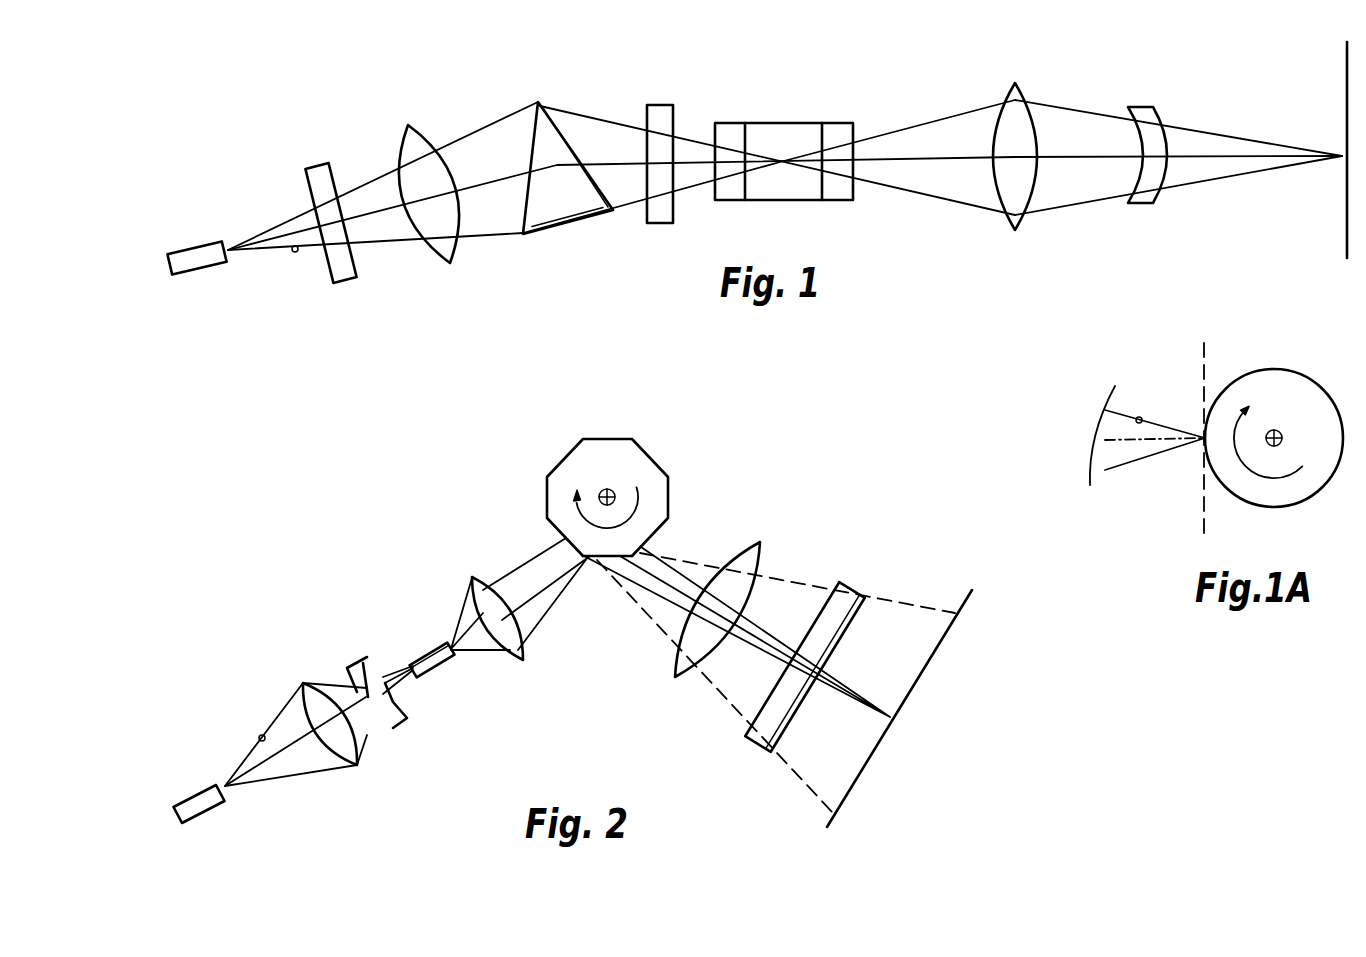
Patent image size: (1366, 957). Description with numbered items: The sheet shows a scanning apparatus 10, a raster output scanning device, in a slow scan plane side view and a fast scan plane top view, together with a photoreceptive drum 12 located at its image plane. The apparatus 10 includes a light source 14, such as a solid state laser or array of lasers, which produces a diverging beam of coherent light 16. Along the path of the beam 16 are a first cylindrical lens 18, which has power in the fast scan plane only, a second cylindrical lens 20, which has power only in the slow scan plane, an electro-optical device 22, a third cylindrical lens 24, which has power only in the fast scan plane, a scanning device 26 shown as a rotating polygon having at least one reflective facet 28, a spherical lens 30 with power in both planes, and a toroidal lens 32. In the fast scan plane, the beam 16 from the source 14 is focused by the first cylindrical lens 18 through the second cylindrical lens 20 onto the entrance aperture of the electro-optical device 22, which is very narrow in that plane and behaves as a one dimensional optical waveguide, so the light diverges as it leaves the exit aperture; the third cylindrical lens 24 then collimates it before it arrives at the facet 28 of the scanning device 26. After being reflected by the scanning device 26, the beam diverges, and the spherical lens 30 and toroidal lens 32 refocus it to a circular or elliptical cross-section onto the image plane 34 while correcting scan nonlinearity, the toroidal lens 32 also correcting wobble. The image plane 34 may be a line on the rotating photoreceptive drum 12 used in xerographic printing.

In FIG. 1, the scanning apparatus 10 is at (1098, 54).
In FIG. 2, the scanning apparatus 10 is at (362, 526).
In FIG. 1A, the photoreceptive drum 12 is at (1268, 370).
In FIG. 1, the light source 14 is at (197, 252).
In FIG. 2, the light source 14 is at (201, 799).
In FIG. 1, the beam of coherent light 16 is at (293, 253).
In FIG. 1A, the beam of coherent light 16 is at (1139, 417).
In FIG. 2, the beam of coherent light 16 is at (262, 736).
In FIG. 1, the first cylindrical lens 18 is at (320, 168).
In FIG. 2, the first cylindrical lens 18 is at (303, 682).
In FIG. 1, the second cylindrical lens 20 is at (409, 124).
In FIG. 2, the second cylindrical lens 20 is at (358, 657).
In FIG. 1, the electro-optical device 22 is at (540, 106).
In FIG. 2, the electro-optical device 22 is at (430, 650).
In FIG. 1, the third cylindrical lens 24 is at (663, 118).
In FIG. 2, the third cylindrical lens 24 is at (471, 577).
In FIG. 1, the scanning device 26 is at (740, 112).
In FIG. 2, the scanning device 26 is at (637, 465).
In FIG. 1, the reflective facet 28 is at (800, 137).
In FIG. 2, the reflective facet 28 is at (655, 561).
In FIG. 1, the spherical lens 30 is at (1014, 233).
In FIG. 2, the spherical lens 30 is at (762, 542).
In FIG. 1, the toroidal lens 32 is at (1141, 206).
In FIG. 2, the toroidal lens 32 is at (852, 590).
In FIG. 1, the image plane 34 is at (1346, 190).
In FIG. 2, the image plane 34 is at (941, 647).